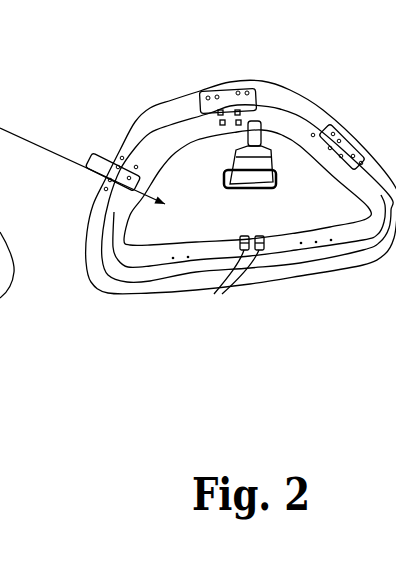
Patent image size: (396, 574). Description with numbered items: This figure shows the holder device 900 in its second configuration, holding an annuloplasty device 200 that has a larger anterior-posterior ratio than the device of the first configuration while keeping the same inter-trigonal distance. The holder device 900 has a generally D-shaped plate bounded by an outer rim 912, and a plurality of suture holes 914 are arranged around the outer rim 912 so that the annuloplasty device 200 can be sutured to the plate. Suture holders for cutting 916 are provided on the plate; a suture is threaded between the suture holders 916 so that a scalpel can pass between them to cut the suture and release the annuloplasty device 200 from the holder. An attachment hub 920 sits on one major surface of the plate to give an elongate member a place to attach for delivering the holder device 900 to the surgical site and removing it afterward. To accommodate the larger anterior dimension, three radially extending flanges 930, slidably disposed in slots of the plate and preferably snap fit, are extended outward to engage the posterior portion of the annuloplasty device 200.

The annuloplasty device 200 is at (88, 278).
The holder device 900 is at (198, 224).
The outer rim 912 is at (110, 220).
The suture holes 914 is at (150, 154).
The suture holders for cutting 916 is at (223, 281).
The attachment hub 920 is at (250, 172).
The radially extending flanges 930 is at (127, 133).